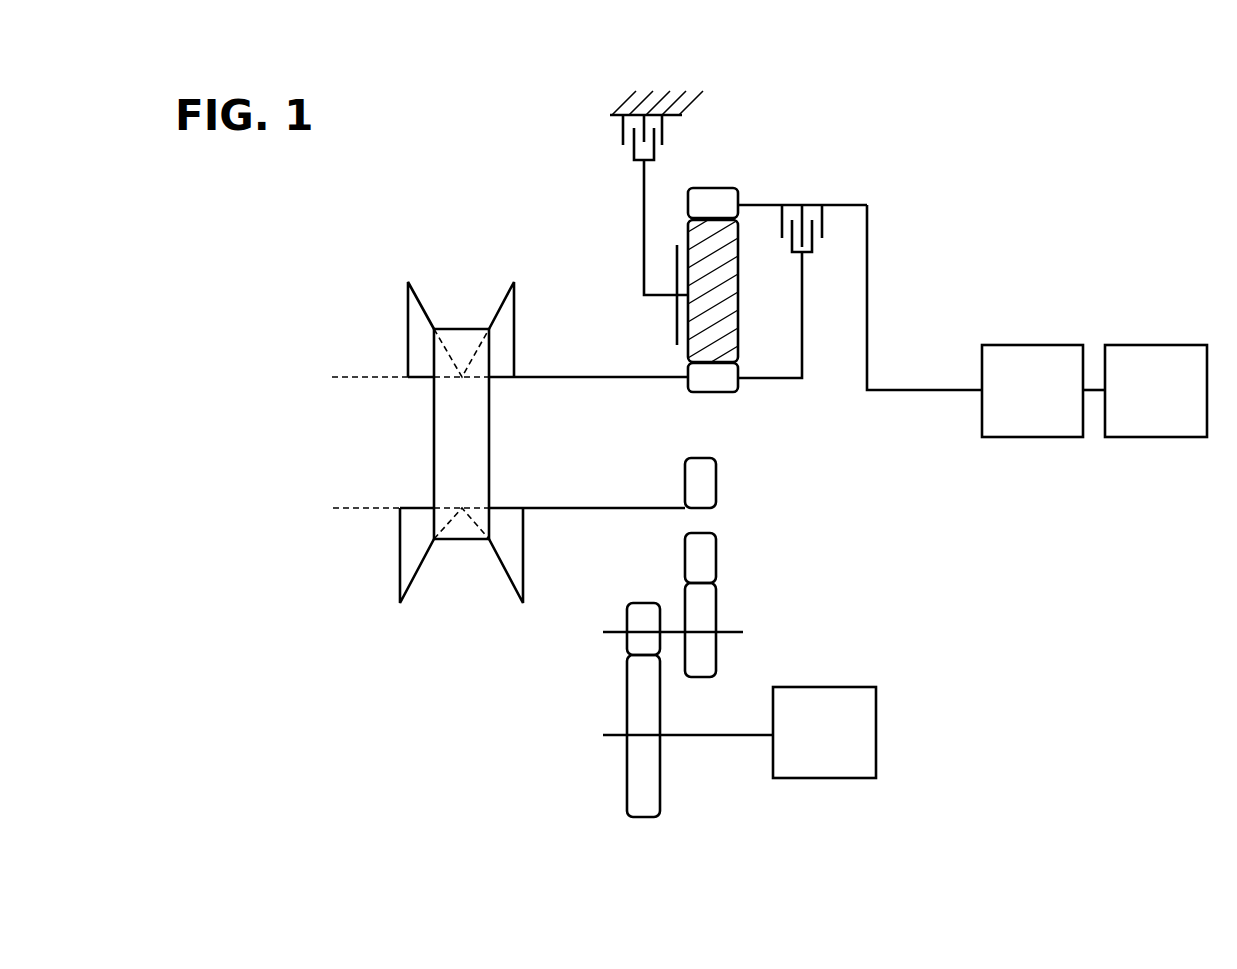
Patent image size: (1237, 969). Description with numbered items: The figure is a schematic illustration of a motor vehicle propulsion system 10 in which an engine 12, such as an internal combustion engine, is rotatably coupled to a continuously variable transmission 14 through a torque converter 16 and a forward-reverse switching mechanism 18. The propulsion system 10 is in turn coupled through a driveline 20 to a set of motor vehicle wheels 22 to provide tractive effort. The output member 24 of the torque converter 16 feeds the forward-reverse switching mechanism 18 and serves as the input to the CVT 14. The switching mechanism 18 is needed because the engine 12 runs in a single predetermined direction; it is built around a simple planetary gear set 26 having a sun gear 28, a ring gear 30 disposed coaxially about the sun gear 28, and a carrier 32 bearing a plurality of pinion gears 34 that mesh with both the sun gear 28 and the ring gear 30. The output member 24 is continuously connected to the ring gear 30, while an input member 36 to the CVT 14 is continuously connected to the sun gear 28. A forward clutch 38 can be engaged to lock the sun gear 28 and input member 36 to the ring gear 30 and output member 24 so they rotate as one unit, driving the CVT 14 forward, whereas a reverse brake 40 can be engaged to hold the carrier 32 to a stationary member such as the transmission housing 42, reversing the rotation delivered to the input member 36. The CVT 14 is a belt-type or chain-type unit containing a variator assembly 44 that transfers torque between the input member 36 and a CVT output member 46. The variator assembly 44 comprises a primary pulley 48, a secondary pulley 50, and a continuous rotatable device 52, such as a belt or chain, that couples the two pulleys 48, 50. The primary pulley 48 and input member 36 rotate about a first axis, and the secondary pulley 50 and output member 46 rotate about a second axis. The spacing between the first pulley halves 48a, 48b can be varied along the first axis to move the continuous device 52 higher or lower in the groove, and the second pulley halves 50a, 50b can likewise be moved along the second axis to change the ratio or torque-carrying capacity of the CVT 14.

The motor vehicle propulsion system 10 is at (1043, 131).
The engine 12 is at (1156, 391).
The continuously variable transmission 14 is at (387, 534).
The torque converter 16 is at (1032, 391).
The forward-reverse switching mechanism 18 is at (744, 169).
The driveline 20 is at (752, 574).
The motor vehicle wheels 22 is at (824, 732).
The output member 24 is at (926, 392).
The simple planetary gear set 26 is at (670, 336).
The sun gear 28 is at (713, 378).
The ring gear 30 is at (713, 204).
The carrier 32 is at (676, 276).
The pinion gears 34 is at (721, 261).
The input member 36 is at (640, 378).
The forward clutch 38 is at (814, 194).
The reverse brake 40 is at (613, 137).
The transmission housing 42 is at (659, 101).
The variator assembly 44 is at (437, 444).
The CVT output member 46 is at (598, 510).
The primary pulley 48 is at (398, 340).
The first pulley half 48a is at (425, 318).
The first pulley half 48b is at (500, 318).
The secondary pulley 50 is at (432, 586).
The second pulley half 50a is at (410, 558).
The second pulley half 50b is at (512, 557).
The continuous rotatable device 52 is at (466, 454).